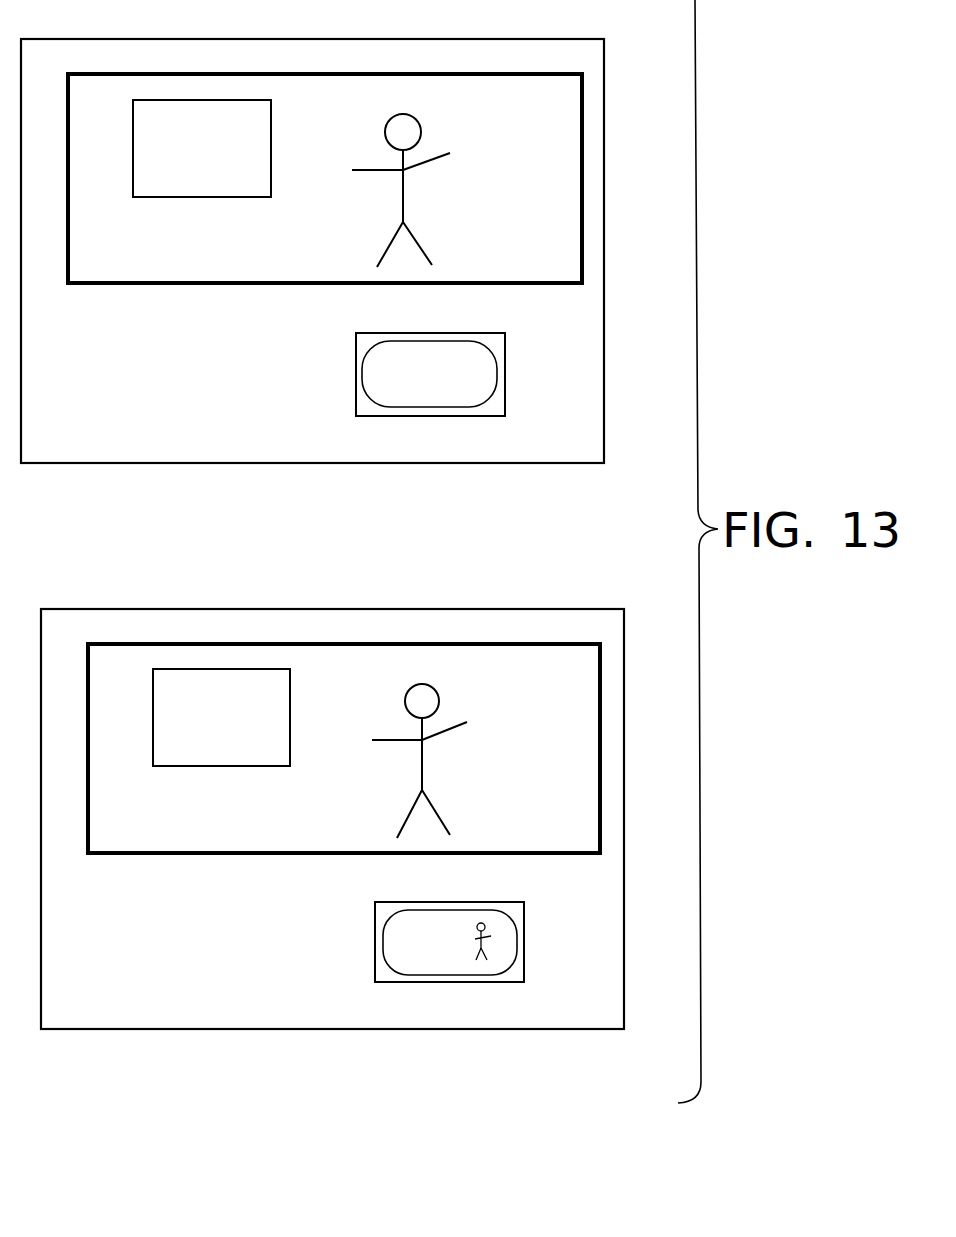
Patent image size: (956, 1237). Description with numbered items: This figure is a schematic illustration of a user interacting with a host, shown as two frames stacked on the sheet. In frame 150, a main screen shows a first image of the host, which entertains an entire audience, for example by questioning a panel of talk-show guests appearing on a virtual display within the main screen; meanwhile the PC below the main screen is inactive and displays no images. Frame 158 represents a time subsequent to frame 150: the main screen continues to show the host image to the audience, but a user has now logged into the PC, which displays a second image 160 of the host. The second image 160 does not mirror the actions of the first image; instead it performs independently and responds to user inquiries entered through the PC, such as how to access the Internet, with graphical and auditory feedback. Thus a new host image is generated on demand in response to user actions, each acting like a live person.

The frame 150 is at (605, 256).
The frame 158 is at (625, 793).
The second image 160 is at (496, 932).